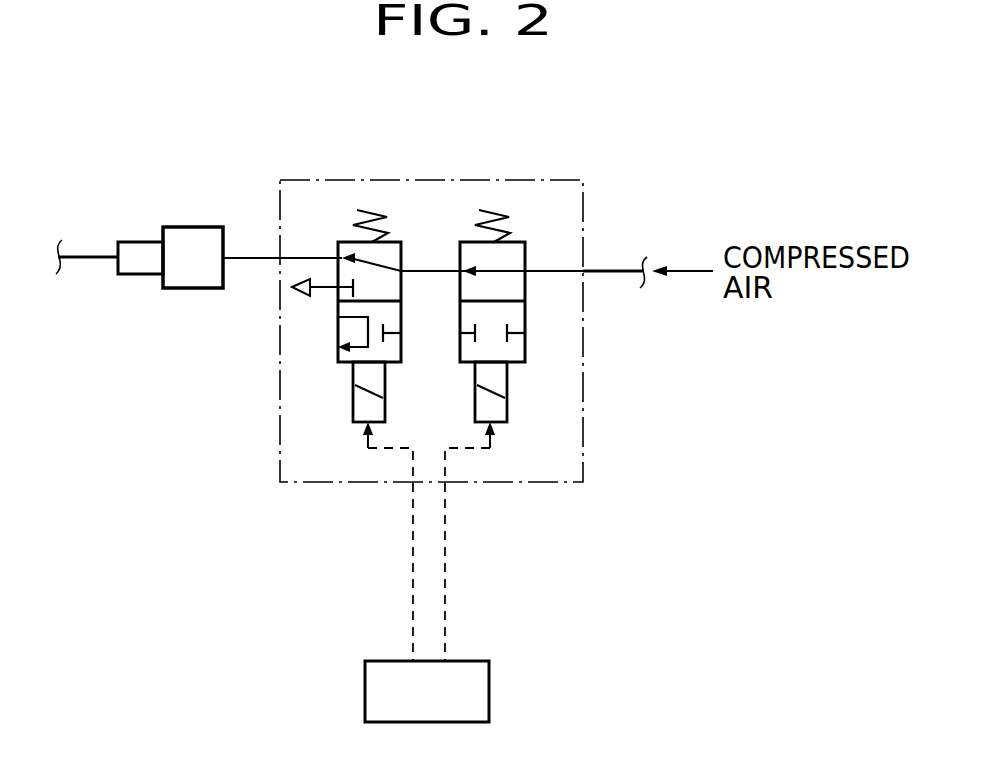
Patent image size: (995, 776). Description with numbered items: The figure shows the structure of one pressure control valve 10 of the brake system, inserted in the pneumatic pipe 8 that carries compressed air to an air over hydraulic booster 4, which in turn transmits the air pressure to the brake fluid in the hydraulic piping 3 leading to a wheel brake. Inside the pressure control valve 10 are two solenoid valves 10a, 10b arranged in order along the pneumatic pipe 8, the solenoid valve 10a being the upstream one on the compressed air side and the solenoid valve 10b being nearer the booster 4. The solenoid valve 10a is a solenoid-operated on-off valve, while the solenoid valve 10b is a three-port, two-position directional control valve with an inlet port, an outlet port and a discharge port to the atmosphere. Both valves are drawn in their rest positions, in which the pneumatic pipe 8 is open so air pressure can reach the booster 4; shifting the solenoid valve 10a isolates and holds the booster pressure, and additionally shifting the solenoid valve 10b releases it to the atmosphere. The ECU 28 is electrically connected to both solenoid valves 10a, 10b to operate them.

The hydraulic piping 3 is at (89, 253).
The air over hydraulic booster 4 is at (200, 226).
The pneumatic pipe 8 is at (620, 270).
The pressure control valve 10 is at (527, 180).
The solenoid valve 10a is at (522, 242).
The solenoid valve 10b is at (342, 242).
The ECU 28 is at (490, 673).